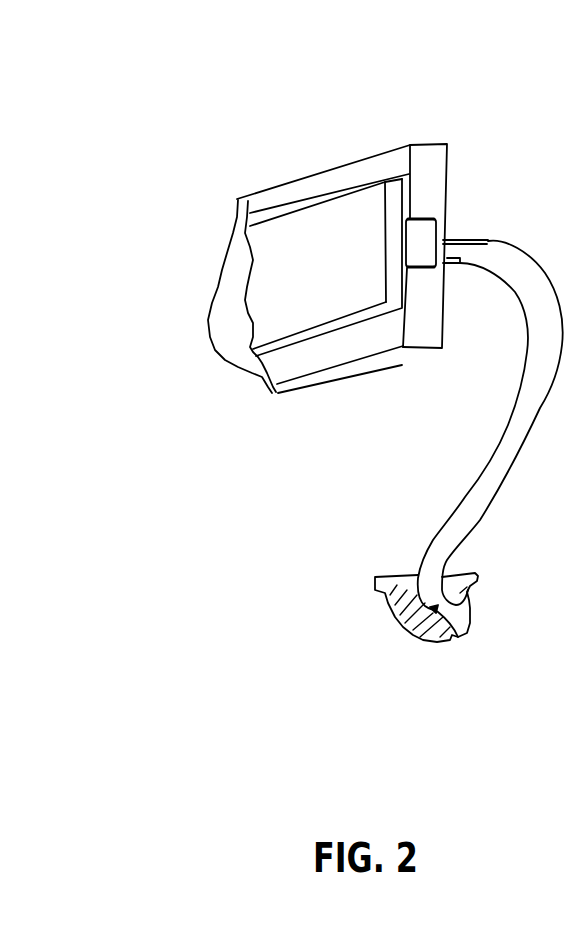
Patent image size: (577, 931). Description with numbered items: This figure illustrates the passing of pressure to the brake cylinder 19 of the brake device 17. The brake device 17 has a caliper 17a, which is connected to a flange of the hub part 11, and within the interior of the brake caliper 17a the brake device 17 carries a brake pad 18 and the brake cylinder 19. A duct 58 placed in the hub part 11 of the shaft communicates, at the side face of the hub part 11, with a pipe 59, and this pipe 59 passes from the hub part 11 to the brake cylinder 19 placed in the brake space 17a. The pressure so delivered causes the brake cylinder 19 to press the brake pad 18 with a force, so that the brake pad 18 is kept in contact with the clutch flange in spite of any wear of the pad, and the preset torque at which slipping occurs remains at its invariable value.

The brake device 17 is at (371, 124).
The brake caliper 17a is at (297, 393).
The brake pad 18 is at (315, 238).
The brake cylinder 19 is at (418, 236).
The pipe 59 is at (443, 516).
The duct 58 is at (412, 636).
The hub part 11 is at (375, 592).